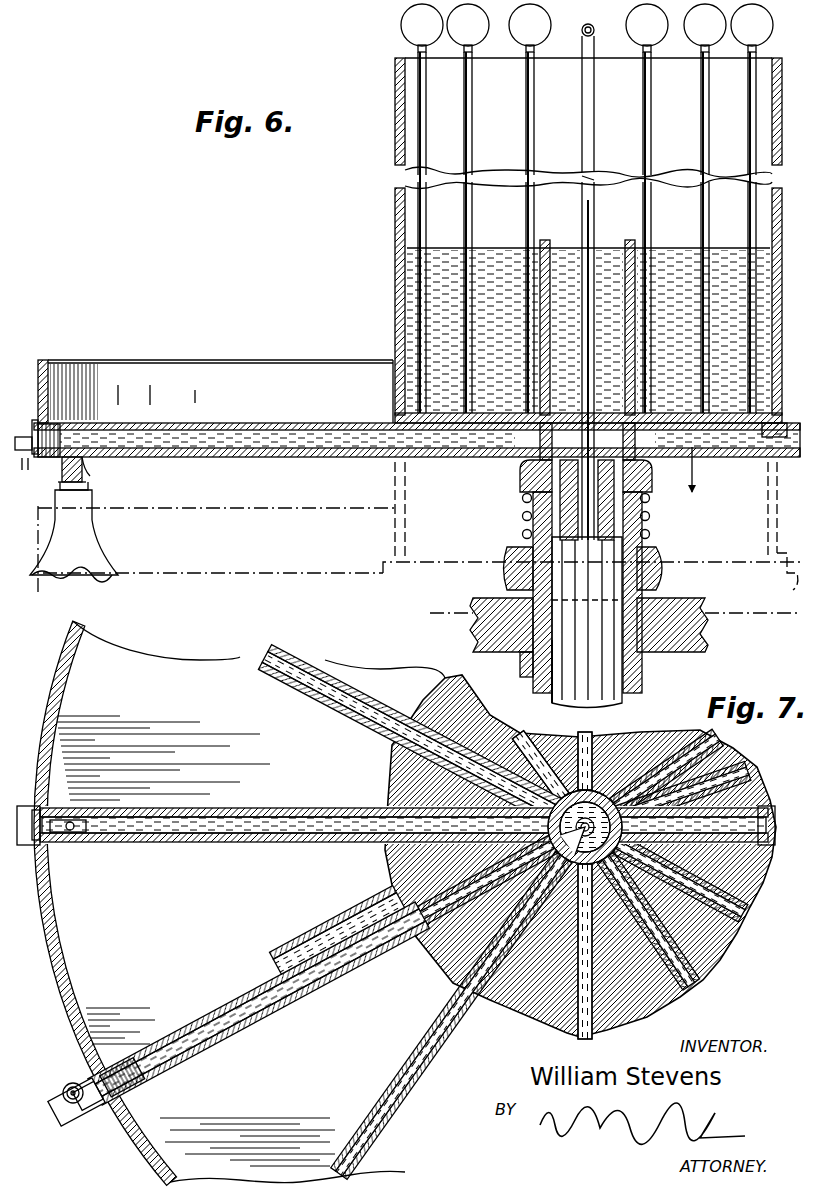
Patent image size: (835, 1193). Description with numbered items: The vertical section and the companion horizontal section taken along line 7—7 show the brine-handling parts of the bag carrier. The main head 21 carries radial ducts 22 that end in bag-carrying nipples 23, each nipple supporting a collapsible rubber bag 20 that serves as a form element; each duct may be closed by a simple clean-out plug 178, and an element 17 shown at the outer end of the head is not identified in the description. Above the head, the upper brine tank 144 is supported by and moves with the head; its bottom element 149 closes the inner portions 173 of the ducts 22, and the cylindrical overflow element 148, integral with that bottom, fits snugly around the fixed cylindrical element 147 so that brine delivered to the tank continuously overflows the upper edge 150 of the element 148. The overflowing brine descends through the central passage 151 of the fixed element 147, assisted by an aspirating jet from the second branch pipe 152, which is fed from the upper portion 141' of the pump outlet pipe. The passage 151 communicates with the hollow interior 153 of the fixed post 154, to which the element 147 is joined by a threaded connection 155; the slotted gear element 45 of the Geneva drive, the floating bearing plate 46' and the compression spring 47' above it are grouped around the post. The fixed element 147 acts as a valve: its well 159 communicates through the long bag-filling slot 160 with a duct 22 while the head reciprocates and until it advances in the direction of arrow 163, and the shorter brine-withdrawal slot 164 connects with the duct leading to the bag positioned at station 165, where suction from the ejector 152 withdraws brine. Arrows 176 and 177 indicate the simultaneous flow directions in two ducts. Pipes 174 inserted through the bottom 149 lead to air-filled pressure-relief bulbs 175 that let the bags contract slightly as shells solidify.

In FIG. 6, the pressure-relief compensating bulbs 175 is at (410, 37).
In FIG. 6, the pipes 174 is at (424, 124).
In FIG. 6, the upper portion of outlet pipe 141' is at (607, 19).
In FIG. 6, the second branch pipe 152 is at (591, 143).
In FIG. 6, the upper edge of cylindrical overflow element 150 is at (542, 247).
In FIG. 6, the upper brine tank 144 is at (397, 268).
In FIG. 6, the cylindrical overflow element 148 is at (633, 298).
In FIG. 6, the bottom element of upper tank 149 is at (458, 414).
In FIG. 6, the inner portions of ducts 173 is at (493, 432).
In FIG. 6, the main head 21 is at (213, 375).
In FIG. 6, the radial ducts 22 is at (224, 436).
In FIG. 7, the radial ducts 22 is at (200, 826).
In FIG. 6, the clean-out plug 178 is at (38, 426).
In FIG. 7, the clean-out plug 178 is at (64, 1082).
In FIG. 6, the end cap 17 is at (26, 460).
In FIG. 6, the bag-carrying nipples 23 is at (86, 474).
In FIG. 7, the bag-carrying nipples 23 is at (134, 1079).
In FIG. 6, the bags 20 is at (78, 545).
In FIG. 6, the well 159 is at (650, 466).
In FIG. 6, the section line 7— 7 is at (700, 473).
In FIG. 6, the compression spring 47' is at (497, 515).
In FIG. 6, the fixed cylindrical element 147 is at (607, 528).
In FIG. 6, the central passage 151 is at (600, 521).
In FIG. 6, the bag-filling vertical slot 160 is at (548, 520).
In FIG. 7, the bag-filling vertical slot 160 is at (416, 868).
In FIG. 6, the floating bearing plate 46' is at (623, 560).
In FIG. 6, the slotted gear element 45 is at (705, 642).
In FIG. 6, the brine-withdrawal slot 164 is at (528, 662).
In FIG. 7, the brine-withdrawal slot 164 is at (498, 1008).
In FIG. 6, the hollow interior of fixed post 153 is at (568, 708).
In FIG. 6, the fixed post 154 is at (583, 684).
In FIG. 6, the threaded connection 155 is at (640, 692).
In FIG. 7, the flow arrow 176 is at (254, 822).
In FIG. 7, the flow arrow 177 is at (299, 985).
In FIG. 7, the advance arrow 163 is at (221, 847).
In FIG. 7, the brine-withdrawal station 165 is at (58, 1116).